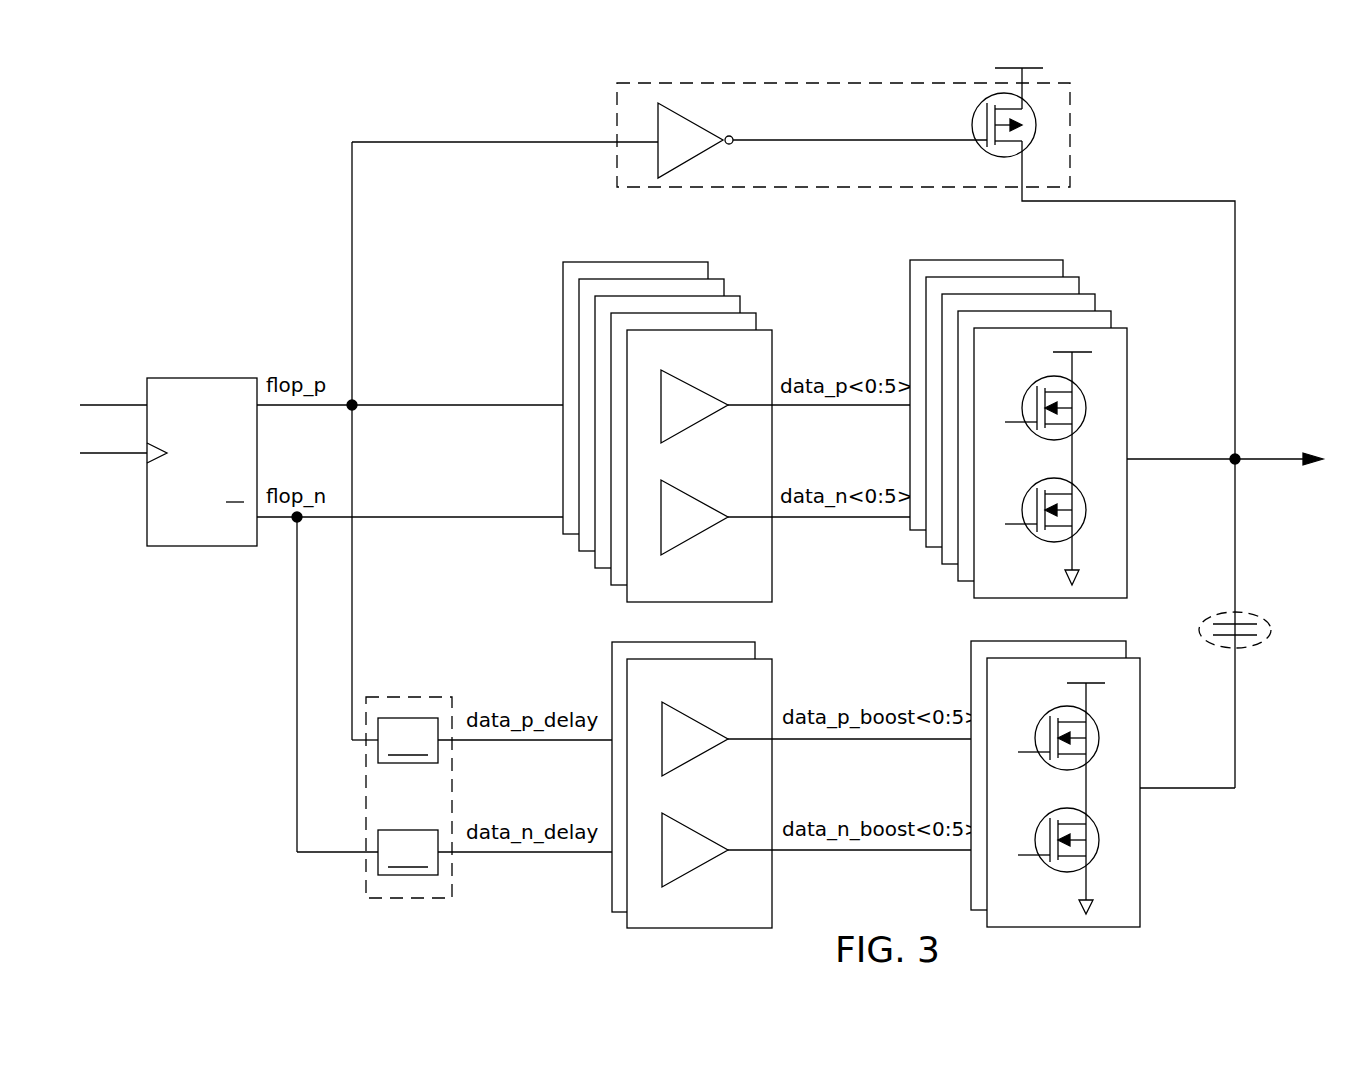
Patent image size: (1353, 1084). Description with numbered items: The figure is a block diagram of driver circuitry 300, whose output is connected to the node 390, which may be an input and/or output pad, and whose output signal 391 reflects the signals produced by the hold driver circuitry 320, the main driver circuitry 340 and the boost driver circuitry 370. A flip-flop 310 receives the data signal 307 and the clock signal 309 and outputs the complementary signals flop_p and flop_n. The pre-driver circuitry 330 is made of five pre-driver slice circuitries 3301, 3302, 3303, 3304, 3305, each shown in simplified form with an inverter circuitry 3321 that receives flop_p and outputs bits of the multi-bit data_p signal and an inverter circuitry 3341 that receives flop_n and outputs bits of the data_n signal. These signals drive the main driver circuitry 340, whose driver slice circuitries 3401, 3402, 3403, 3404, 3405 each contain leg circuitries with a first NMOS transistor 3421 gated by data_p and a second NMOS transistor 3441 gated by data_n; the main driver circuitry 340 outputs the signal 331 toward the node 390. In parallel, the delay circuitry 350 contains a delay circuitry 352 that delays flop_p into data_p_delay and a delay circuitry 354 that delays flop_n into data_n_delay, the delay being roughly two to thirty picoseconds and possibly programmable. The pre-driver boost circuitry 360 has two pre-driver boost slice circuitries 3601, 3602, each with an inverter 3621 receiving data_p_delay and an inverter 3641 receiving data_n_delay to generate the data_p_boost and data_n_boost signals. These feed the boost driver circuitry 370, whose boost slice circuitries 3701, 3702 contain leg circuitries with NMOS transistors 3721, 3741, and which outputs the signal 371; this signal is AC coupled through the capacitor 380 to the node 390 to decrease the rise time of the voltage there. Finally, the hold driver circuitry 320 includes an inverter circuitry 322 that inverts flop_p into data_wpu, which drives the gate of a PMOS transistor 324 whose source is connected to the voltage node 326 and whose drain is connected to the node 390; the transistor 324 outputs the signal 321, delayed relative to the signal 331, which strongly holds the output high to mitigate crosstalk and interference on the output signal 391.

The driver circuitry 300 is at (199, 102).
The data signal 307 is at (113, 390).
The clock signal 309 is at (113, 439).
The flip-flop 310 is at (208, 378).
The hold driver circuitry 320 is at (617, 162).
The signal 321 is at (1128, 464).
The inverter circuitry 322 is at (690, 122).
The transistor 324 is at (985, 148).
The voltage node 326 is at (1019, 74).
The pre-driver circuitry 330 is at (676, 410).
The pre-driver slice circuitry 3301 is at (772, 353).
The pre-driver slice circuitry 3302 is at (756, 322).
The pre-driver slice circuitry 3303 is at (740, 305).
The pre-driver slice circuitry 3304 is at (724, 285).
The pre-driver slice circuitry 3305 is at (708, 268).
The inverter circuitry 3321 is at (688, 430).
The inverter circuitry 3341 is at (688, 542).
The signal 331 is at (1181, 445).
The main driver circuitry 340 is at (1038, 400).
The driver slice circuitry 3401 is at (1127, 352).
The driver slice circuitry 3402 is at (1111, 320).
The driver slice circuitry 3403 is at (1095, 302).
The driver slice circuitry 3404 is at (1079, 284).
The driver slice circuitry 3405 is at (1063, 267).
The first transistor 3421 is at (1040, 438).
The second transistor 3441 is at (1032, 528).
The delay circuitry 350 is at (400, 697).
The delay circuitry 352 is at (408, 740).
The delay circuitry 354 is at (408, 852).
The pre-driver boost circuitry 360 is at (687, 765).
The pre-driver boost slice circuitry 3601 is at (772, 678).
The pre-driver boost slice circuitry 3602 is at (755, 650).
The inverter 3621 is at (690, 762).
The inverter 3641 is at (690, 873).
The boost driver circuitry 370 is at (1053, 749).
The boost slice circuitry 3701 is at (1140, 675).
The boost slice circuitry 3702 is at (1000, 618).
The first transistor 3721 is at (1052, 768).
The second transistor 3741 is at (1045, 858).
The signal 371 is at (1187, 774).
The capacitor 380 is at (1248, 615).
The node 390 is at (1238, 463).
The output signal 391 is at (1279, 448).